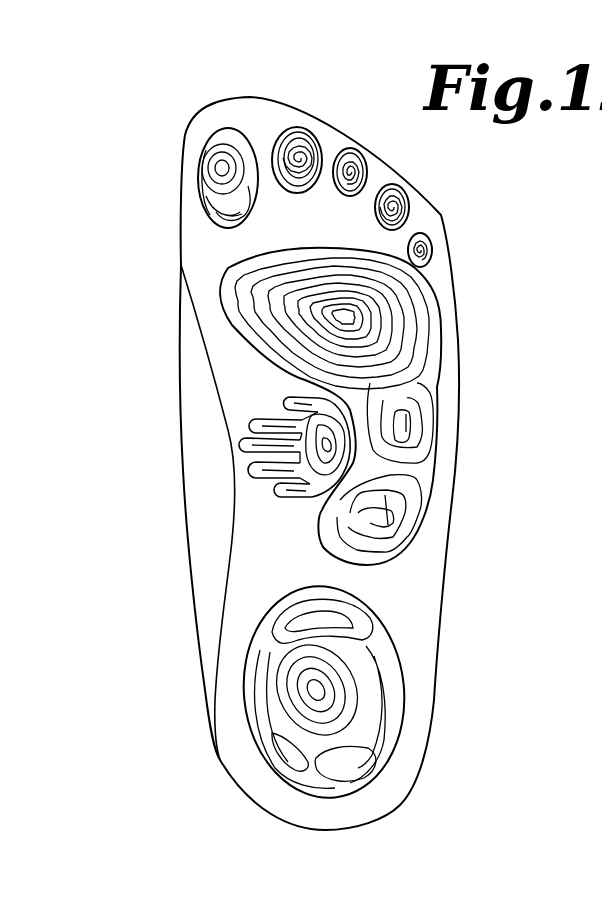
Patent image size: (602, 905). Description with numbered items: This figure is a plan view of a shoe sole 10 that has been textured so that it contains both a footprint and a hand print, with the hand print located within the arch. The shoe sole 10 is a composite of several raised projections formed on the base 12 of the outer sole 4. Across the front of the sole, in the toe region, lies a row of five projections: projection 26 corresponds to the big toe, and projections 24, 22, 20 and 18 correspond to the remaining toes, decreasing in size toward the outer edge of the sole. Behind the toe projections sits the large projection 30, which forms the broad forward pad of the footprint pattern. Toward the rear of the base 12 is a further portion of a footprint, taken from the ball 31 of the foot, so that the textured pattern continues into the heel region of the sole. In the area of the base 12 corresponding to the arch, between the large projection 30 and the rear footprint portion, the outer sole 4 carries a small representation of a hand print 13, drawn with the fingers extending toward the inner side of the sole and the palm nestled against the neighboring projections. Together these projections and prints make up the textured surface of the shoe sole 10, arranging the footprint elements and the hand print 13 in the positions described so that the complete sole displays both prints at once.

The outer sole 4 is at (187, 497).
The shoe sole 10 is at (0, 531).
The base 12 is at (403, 595).
The hand print 13 is at (252, 420).
The projection 18 is at (428, 250).
The projection 20 is at (397, 207).
The projection 22 is at (358, 168).
The projection 24 is at (301, 150).
The projection 26 is at (222, 158).
The large projection 30 is at (380, 342).
The ball of the foot 31 is at (273, 724).